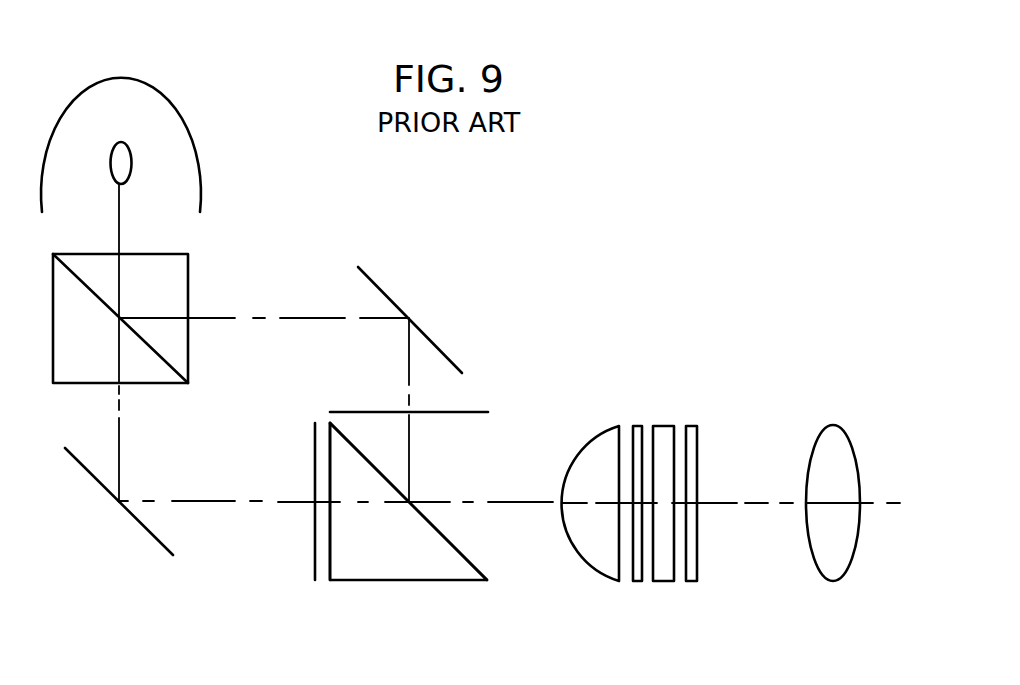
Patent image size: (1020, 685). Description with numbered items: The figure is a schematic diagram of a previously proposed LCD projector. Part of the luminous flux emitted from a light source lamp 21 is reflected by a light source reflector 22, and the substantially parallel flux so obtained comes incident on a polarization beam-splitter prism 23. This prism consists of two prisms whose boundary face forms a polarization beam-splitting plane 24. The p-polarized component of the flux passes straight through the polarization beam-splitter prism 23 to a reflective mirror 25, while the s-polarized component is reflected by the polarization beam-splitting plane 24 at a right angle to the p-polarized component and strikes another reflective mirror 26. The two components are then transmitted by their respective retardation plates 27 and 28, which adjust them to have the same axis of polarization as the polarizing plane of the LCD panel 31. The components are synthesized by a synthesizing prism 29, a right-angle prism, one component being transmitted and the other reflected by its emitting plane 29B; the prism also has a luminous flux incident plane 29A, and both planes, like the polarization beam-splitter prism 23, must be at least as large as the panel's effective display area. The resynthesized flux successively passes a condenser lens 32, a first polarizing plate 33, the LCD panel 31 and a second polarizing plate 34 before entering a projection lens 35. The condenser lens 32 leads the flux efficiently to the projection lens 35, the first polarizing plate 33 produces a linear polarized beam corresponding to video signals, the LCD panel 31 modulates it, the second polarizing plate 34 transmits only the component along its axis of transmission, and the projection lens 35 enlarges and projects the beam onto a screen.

The light source lamp 21 is at (123, 181).
The light source reflector 22 is at (105, 78).
The polarization beam-splitter prism 23 is at (189, 262).
The polarization beam-splitting plane 24 is at (90, 296).
The reflective mirror 25 is at (128, 518).
The reflective mirror 26 is at (397, 302).
The retardation plate 27 is at (315, 451).
The retardation plate 28 is at (455, 414).
The synthesizing prism 29 is at (356, 582).
The luminous flux incident plane 29A is at (330, 553).
The emitting plane 29B is at (446, 540).
The LCD panel 31 is at (663, 426).
The condenser lens 32 is at (614, 426).
The first polarizing plate 33 is at (637, 583).
The second polarizing plate 34 is at (692, 583).
The projection lens 35 is at (833, 425).